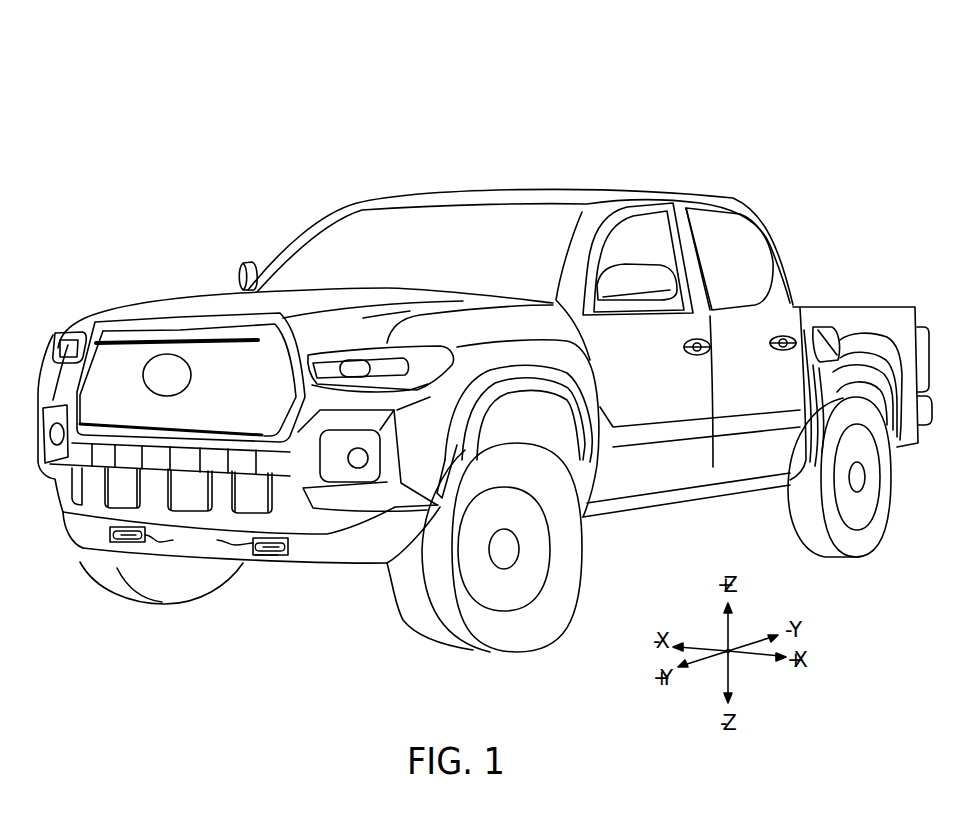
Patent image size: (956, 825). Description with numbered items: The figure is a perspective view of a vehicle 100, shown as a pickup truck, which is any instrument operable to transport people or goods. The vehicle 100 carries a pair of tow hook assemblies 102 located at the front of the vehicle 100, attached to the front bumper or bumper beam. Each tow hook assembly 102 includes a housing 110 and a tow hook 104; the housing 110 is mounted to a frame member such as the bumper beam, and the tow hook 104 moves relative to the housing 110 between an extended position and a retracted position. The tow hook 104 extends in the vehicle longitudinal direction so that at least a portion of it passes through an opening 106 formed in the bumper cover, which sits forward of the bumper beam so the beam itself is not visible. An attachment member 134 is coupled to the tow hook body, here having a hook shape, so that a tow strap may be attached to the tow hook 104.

The vehicle 100 is at (485, 326).
The tow hook assembly 102 is at (198, 580).
The tow hook 104 is at (138, 542).
The opening 106 is at (199, 541).
The housing 110 is at (251, 554).
The attachment member 134 is at (261, 556).